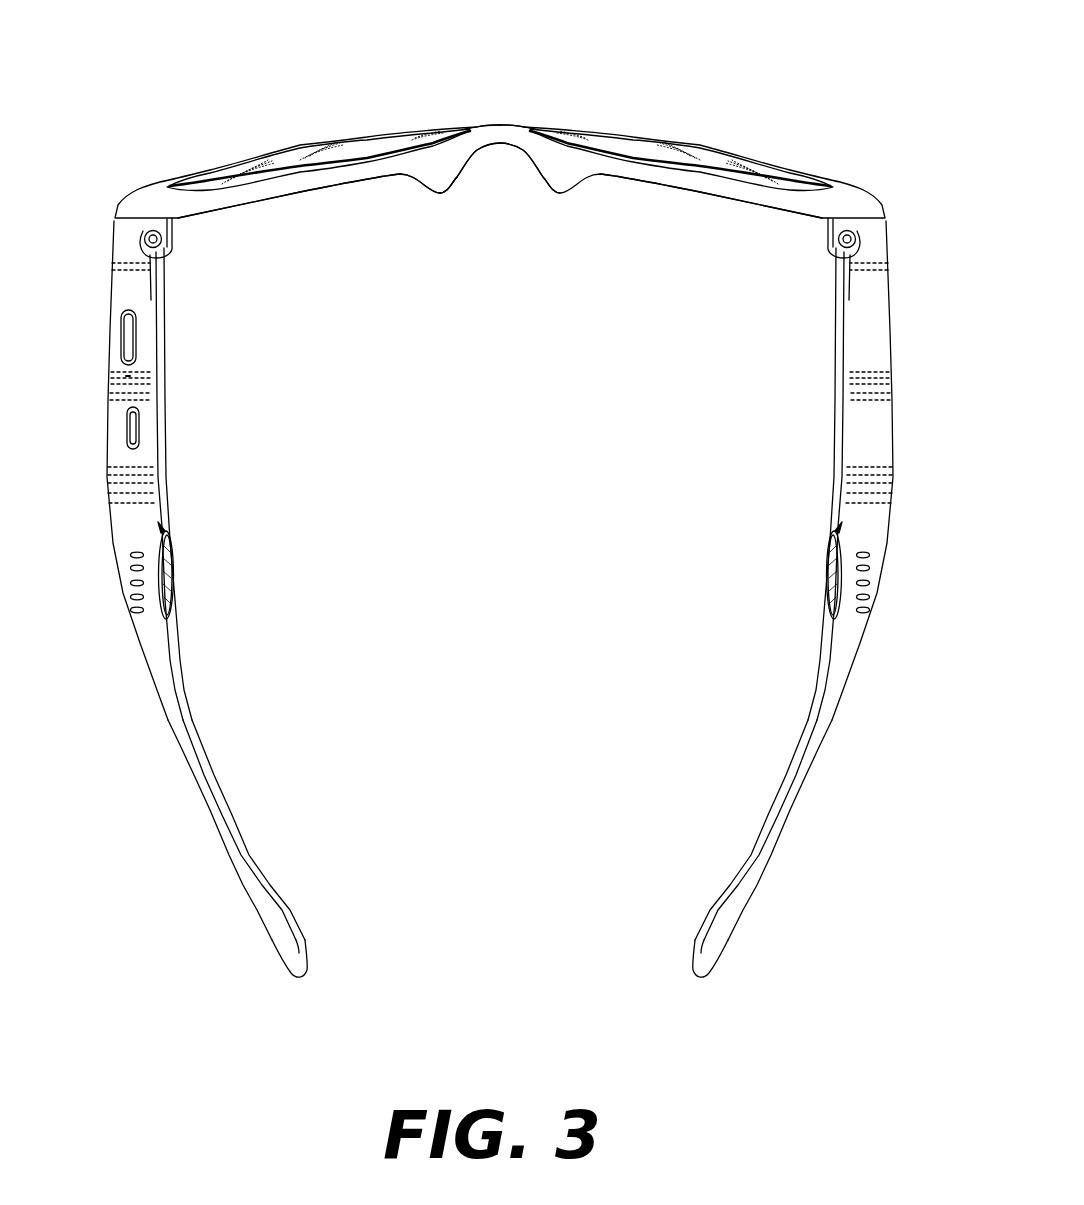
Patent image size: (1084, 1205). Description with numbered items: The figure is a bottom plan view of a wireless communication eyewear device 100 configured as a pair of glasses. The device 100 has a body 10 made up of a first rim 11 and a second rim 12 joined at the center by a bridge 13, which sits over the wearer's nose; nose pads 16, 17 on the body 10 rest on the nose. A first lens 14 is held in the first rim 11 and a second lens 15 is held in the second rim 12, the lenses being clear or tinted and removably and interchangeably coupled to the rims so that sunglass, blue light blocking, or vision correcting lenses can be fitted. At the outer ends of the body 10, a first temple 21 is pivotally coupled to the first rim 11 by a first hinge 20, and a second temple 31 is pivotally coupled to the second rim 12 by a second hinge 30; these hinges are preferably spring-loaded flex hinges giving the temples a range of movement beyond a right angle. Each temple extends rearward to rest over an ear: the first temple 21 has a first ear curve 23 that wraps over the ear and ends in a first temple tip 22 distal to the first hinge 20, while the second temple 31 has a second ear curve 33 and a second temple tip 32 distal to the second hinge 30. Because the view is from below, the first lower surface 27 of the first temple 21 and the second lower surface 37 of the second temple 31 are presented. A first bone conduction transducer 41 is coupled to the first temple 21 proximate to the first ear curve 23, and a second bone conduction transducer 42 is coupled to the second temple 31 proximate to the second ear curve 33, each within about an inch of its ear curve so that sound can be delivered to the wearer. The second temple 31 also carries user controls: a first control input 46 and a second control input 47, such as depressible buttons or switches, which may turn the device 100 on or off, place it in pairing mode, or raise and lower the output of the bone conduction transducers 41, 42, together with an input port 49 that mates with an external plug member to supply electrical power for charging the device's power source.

The wireless communication eyewear device 100 is at (660, 73).
The body 10 is at (160, 186).
The bridge 13 is at (497, 127).
The second lens 15 is at (293, 160).
The first lens 14 is at (705, 158).
The second rim 12 is at (288, 192).
The first rim 11 is at (715, 189).
The nose pad 17 is at (450, 165).
The nose pad 16 is at (547, 167).
The second hinge 30 is at (172, 246).
The first hinge 20 is at (828, 246).
The second temple 31 is at (110, 548).
The first temple 21 is at (890, 548).
The second ear curve 33 is at (213, 782).
The first ear curve 23 is at (787, 782).
The second temple tip 32 is at (290, 950).
The first temple tip 22 is at (710, 950).
The second bone conduction transducer 42 is at (172, 568).
The first bone conduction transducer 41 is at (828, 568).
The second lower surface 37 is at (140, 509).
The first lower surface 27 is at (860, 509).
The second control input 47 is at (122, 322).
The first control input 46 is at (131, 355).
The input port 49 is at (130, 424).